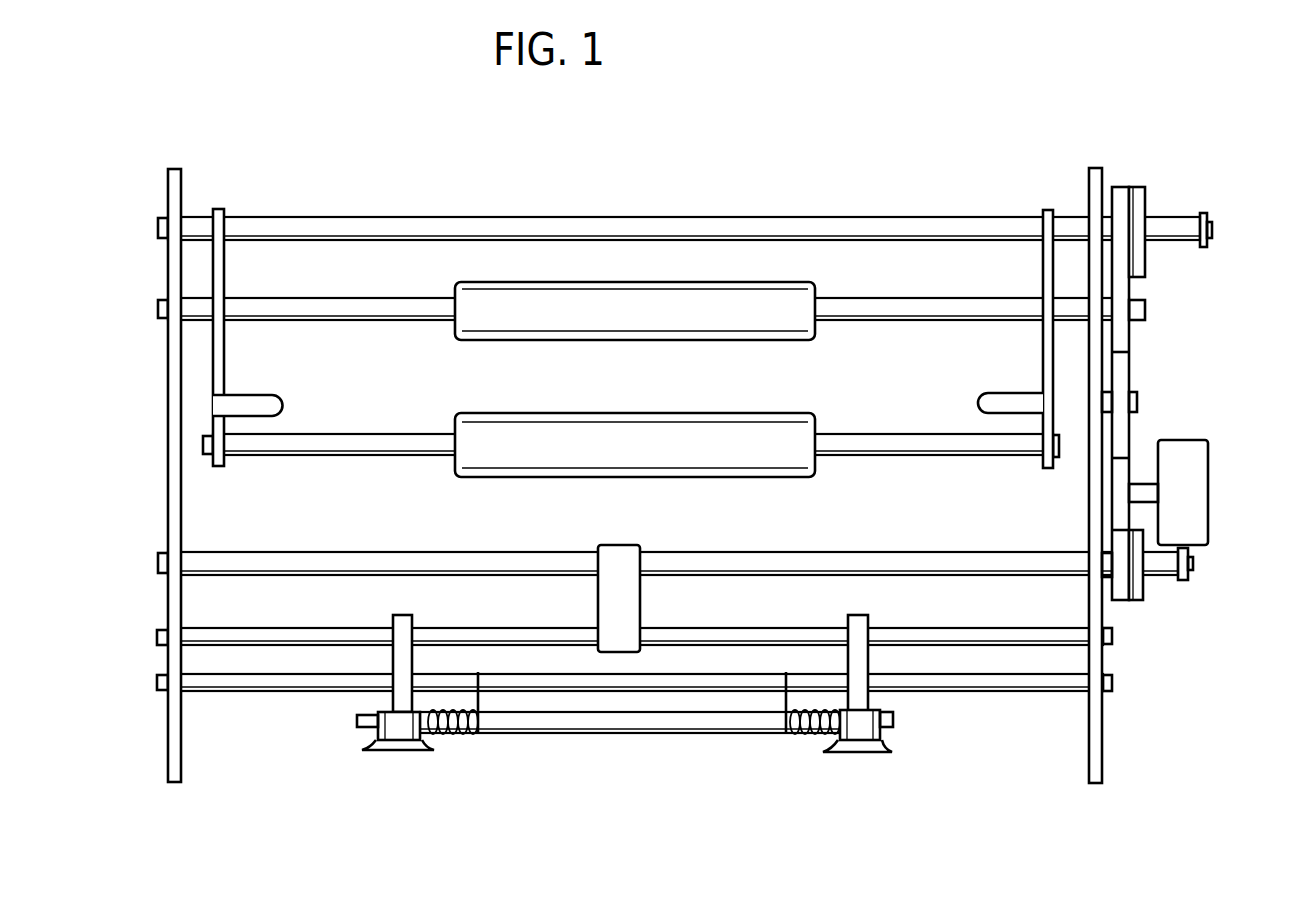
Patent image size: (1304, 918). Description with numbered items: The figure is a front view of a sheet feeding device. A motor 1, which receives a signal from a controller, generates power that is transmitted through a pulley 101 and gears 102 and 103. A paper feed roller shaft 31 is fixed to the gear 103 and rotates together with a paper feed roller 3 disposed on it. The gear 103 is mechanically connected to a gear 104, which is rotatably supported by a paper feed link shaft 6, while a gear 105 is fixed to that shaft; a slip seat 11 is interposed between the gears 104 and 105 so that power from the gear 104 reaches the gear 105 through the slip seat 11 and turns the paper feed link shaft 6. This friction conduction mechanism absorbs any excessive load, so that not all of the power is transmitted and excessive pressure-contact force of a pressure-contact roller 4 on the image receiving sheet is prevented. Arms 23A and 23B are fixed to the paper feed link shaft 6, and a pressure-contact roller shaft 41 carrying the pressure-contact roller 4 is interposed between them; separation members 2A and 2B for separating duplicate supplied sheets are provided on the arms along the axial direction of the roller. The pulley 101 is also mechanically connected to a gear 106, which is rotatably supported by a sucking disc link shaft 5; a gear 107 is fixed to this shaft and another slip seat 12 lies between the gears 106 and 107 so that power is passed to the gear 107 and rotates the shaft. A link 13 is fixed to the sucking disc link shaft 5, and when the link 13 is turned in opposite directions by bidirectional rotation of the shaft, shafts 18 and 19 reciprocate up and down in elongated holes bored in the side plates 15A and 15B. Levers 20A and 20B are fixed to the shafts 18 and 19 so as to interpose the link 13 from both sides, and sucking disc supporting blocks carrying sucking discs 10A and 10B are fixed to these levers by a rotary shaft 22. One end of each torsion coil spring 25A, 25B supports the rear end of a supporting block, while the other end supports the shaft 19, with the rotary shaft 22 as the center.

The motor 1 is at (1200, 467).
The separation member 2A is at (983, 403).
The separation member 2B is at (263, 400).
The paper feed roller 3 is at (488, 319).
The pressure-contact roller 4 is at (650, 430).
The sucking disc link shaft 5 is at (252, 552).
The paper feed link shaft 6 is at (277, 222).
The sucking disc 10A is at (860, 746).
The sucking disc 10B is at (402, 746).
The slip seat 11 is at (1133, 190).
The slip seat 12 is at (1131, 594).
The link 13 is at (620, 548).
The side plate 15A is at (1093, 196).
The side plate 15B is at (170, 179).
The shaft 18 is at (242, 628).
The shaft 19 is at (228, 691).
The lever 20A is at (858, 617).
The lever 20B is at (405, 617).
The rotary shaft 22 is at (623, 714).
The arm 23A is at (1047, 215).
The arm 23B is at (220, 210).
The torsion coil spring 25A is at (785, 696).
The torsion coil spring 25B is at (479, 696).
The paper feed roller shaft 31 is at (842, 306).
The pressure-contact roller shaft 41 is at (850, 445).
The pulley 101 is at (1122, 473).
The gear 102 is at (1125, 378).
The gear 103 is at (1121, 337).
The gear 104 is at (1120, 190).
The gear 105 is at (1140, 268).
The gear 106 is at (1118, 600).
The gear 107 is at (1140, 590).